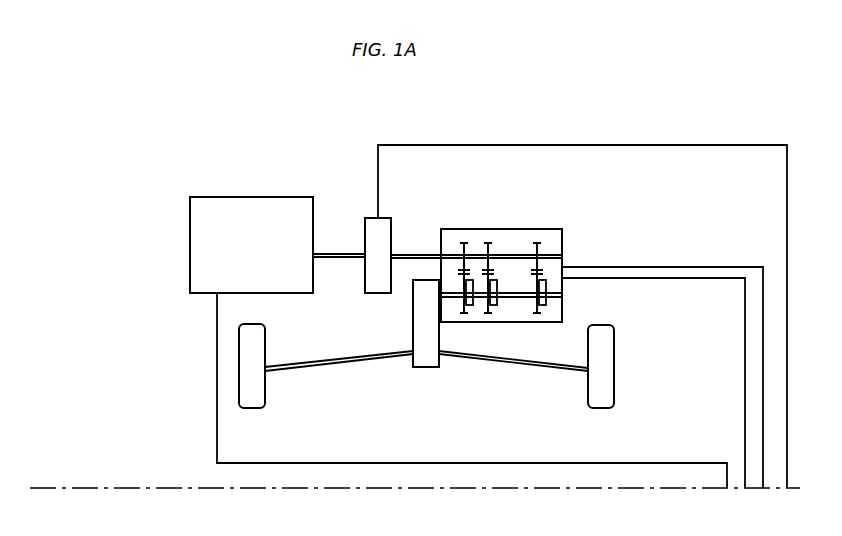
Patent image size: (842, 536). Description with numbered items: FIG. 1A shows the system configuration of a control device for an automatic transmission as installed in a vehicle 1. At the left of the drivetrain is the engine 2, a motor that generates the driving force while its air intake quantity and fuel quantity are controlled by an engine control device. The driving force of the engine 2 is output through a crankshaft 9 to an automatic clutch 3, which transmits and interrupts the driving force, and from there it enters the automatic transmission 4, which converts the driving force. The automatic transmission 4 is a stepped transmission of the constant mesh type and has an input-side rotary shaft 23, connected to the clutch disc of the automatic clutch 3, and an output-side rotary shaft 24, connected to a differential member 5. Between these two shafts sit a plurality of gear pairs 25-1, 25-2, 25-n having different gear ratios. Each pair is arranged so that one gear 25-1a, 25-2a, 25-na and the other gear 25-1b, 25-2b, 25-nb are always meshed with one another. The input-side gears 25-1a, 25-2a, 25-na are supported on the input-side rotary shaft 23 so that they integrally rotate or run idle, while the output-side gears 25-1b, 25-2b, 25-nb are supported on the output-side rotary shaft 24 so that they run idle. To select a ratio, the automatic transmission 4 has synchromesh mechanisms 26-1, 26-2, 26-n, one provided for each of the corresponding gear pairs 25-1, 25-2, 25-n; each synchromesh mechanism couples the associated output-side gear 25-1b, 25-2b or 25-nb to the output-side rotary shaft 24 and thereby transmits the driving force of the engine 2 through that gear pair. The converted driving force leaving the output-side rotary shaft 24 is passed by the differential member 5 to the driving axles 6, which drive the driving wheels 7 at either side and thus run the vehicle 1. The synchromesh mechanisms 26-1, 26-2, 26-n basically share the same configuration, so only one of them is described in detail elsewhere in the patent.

The vehicle 1 is at (148, 168).
The engine 2 is at (188, 229).
The automatic clutch 3 is at (365, 212).
The automatic transmission 4 is at (605, 218).
The differential member 5 is at (425, 368).
The driving axles 6 is at (325, 363).
The driving wheels 7 is at (255, 400).
The crankshaft 9 is at (343, 258).
The input-side rotary shaft 23 is at (553, 248).
The output-side rotary shaft 24 is at (563, 295).
The gear pair 25-1 is at (460, 238).
The gear pair 25-2 is at (490, 238).
The gear pair 25-n is at (540, 238).
The input-side gear 25-1a is at (459, 247).
The input-side gear 25-2a is at (486, 246).
The input-side gear 25-na is at (535, 246).
The output-side gear 25-1b is at (462, 314).
The output-side gear 25-2b is at (488, 314).
The output-side gear 25-nb is at (538, 314).
The synchromesh mechanism 26-1 is at (470, 306).
The synchromesh mechanism 26-2 is at (494, 304).
The synchromesh mechanism 26-n is at (547, 304).